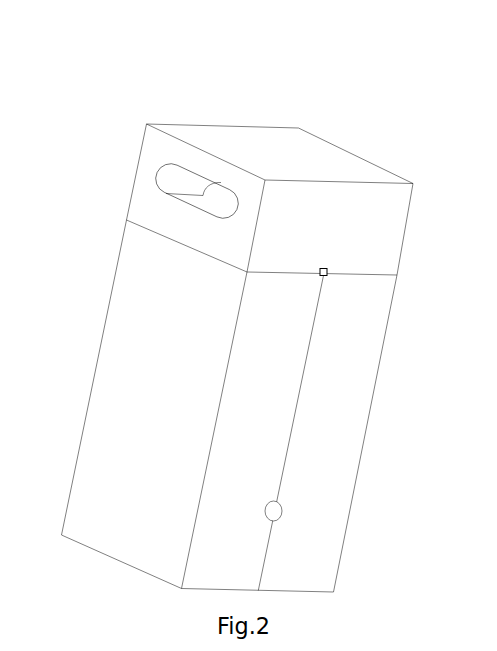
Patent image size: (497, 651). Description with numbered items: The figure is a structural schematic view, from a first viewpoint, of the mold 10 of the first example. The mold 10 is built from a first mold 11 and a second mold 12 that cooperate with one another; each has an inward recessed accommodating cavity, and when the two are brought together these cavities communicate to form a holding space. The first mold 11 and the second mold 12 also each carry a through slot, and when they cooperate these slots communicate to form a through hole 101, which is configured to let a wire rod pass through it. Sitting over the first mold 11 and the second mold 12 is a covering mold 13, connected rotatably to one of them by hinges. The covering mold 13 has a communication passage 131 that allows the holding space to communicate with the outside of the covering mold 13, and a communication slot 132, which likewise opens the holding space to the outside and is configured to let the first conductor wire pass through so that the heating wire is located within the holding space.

The mold 10 is at (325, 70).
The first mold 11 is at (113, 345).
The second mold 12 is at (310, 388).
The covering mold 13 is at (239, 171).
The communication passage 131 is at (172, 180).
The communication slot 132 is at (324, 268).
The through hole 101 is at (275, 502).